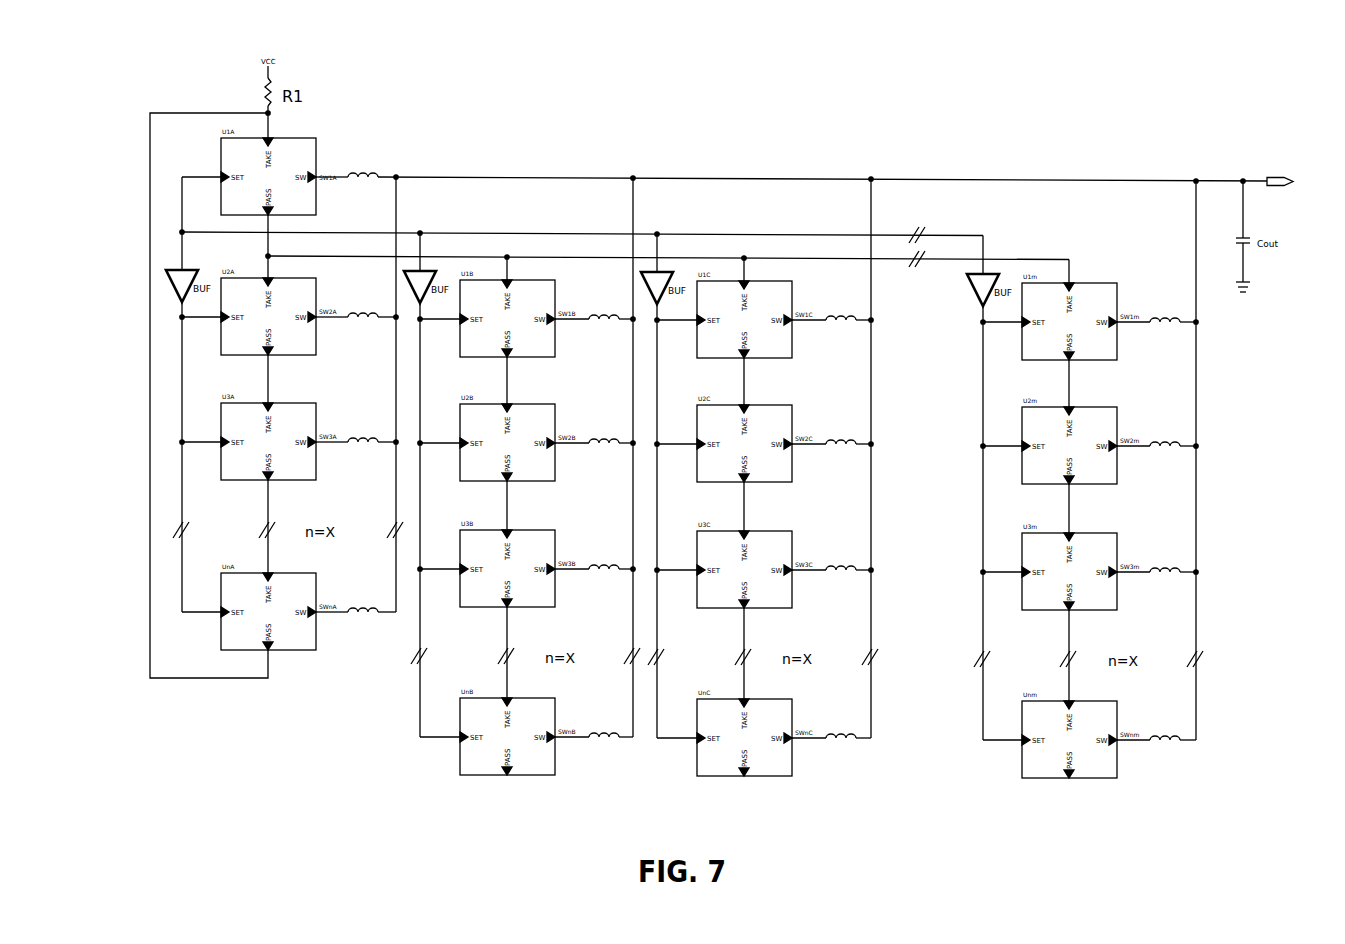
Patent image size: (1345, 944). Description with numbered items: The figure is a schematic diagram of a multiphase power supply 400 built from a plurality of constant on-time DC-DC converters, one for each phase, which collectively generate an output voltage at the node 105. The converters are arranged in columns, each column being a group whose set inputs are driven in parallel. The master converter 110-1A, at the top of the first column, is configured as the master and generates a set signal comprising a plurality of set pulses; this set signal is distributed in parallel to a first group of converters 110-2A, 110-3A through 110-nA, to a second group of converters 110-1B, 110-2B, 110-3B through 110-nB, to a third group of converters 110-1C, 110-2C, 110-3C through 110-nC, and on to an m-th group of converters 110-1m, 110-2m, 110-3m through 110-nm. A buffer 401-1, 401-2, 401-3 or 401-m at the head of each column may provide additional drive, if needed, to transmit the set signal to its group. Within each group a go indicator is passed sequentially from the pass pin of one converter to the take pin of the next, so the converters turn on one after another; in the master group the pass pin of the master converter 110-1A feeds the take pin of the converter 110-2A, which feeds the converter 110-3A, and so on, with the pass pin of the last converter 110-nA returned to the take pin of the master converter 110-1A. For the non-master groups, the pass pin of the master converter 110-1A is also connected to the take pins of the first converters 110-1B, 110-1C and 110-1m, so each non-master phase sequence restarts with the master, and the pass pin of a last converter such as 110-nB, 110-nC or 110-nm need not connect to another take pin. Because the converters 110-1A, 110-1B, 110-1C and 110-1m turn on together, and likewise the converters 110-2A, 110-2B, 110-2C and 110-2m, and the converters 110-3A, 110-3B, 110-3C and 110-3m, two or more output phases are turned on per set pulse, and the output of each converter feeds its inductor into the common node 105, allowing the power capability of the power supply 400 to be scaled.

The multiphase power supply 400 is at (690, 134).
The buffer 401-1 is at (197, 277).
The buffer 401-2 is at (436, 279).
The buffer 401-3 is at (674, 280).
The buffer 401-m is at (999, 282).
The node 105 is at (1276, 177).
The master converter 110-1A is at (312, 138).
The converter 110-2A is at (318, 283).
The converter 110-3A is at (305, 403).
The converter 110-nA is at (305, 573).
The converter 110-1B is at (556, 286).
The converter 110-2B is at (541, 404).
The converter 110-3B is at (541, 530).
The converter 110-nB is at (536, 698).
The converter 110-1C is at (793, 288).
The converter 110-2C is at (780, 405).
The converter 110-3C is at (780, 531).
The converter 110-nC is at (776, 699).
The converter 110-1m is at (1106, 283).
The converter 110-2m is at (1105, 407).
The converter 110-3m is at (1105, 533).
The converter 110-nm is at (1101, 701).